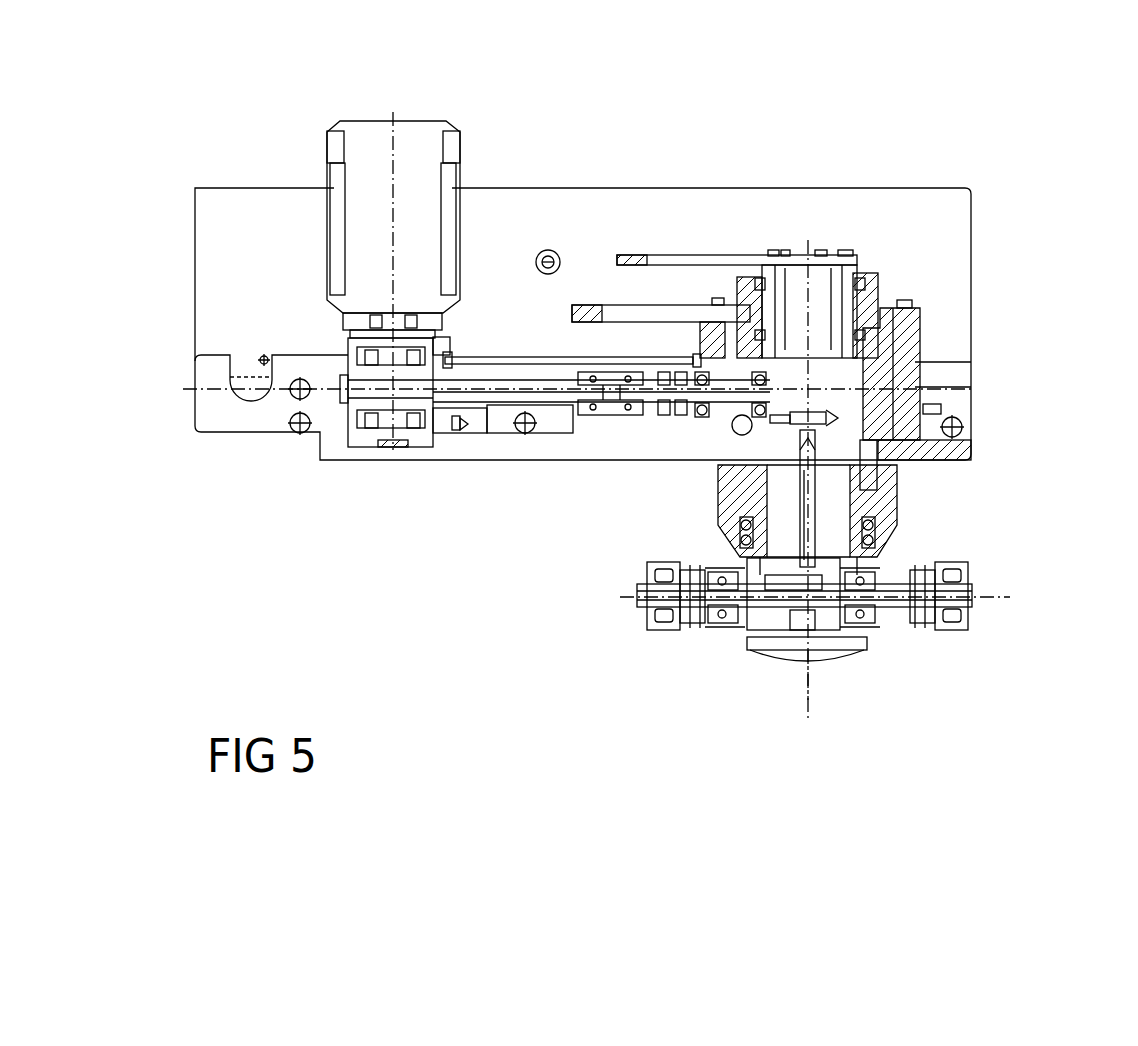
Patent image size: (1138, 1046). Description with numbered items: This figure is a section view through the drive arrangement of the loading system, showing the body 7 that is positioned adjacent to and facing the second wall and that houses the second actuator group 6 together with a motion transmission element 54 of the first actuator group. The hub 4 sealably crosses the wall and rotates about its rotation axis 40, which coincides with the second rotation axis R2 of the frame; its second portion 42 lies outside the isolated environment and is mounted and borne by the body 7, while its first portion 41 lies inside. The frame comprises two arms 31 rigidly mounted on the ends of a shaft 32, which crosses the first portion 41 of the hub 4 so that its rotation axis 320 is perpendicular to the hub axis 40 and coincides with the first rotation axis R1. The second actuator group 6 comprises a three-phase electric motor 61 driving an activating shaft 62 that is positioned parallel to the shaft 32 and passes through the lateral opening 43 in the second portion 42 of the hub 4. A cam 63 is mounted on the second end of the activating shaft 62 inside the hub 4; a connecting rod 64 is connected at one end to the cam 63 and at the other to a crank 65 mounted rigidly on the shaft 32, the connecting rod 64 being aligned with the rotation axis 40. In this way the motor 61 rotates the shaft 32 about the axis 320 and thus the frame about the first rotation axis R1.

The body 7 is at (966, 258).
The motor 61 is at (358, 243).
The second actuator group 6 is at (457, 428).
The activating shaft 62 is at (572, 435).
The cam 63 is at (775, 385).
The motion transmission element 54 is at (755, 257).
The rotation axis 40 is at (813, 298).
The second portion 42 is at (920, 362).
The lateral opening 43 is at (775, 420).
The hub 4 is at (765, 506).
The connecting rod 64 is at (817, 488).
The crank 65 is at (867, 566).
The rotation axis 320 is at (735, 632).
The arms 31 is at (655, 632).
The shaft 32 is at (698, 632).
The first portion 41 is at (865, 640).
The first rotation axis R1 is at (1000, 597).
The second rotation axis R2 is at (812, 697).